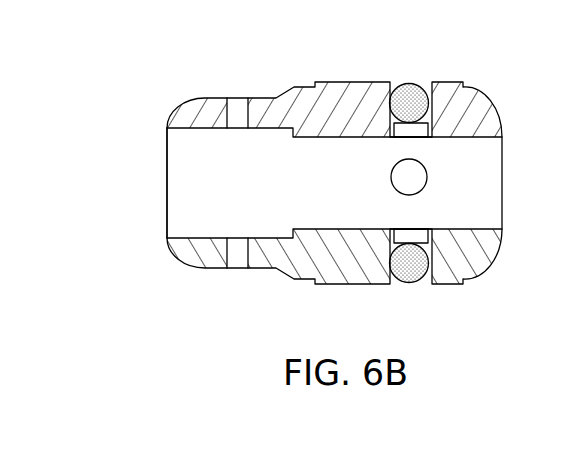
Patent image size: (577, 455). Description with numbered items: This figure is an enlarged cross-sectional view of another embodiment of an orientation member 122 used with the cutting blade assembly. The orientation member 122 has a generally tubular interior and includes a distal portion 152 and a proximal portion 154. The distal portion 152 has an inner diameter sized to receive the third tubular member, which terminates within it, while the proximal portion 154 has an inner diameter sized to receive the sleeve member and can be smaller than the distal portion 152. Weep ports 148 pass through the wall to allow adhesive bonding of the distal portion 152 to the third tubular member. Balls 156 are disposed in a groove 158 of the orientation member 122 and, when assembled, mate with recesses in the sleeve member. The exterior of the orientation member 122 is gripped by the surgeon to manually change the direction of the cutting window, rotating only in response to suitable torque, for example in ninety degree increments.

The orientation member 122 is at (238, 30).
The weep ports 148 is at (235, 104).
The distal portion 152 is at (188, 185).
The proximal portion 154 is at (490, 215).
The balls 156 is at (412, 85).
The groove 158 is at (392, 127).